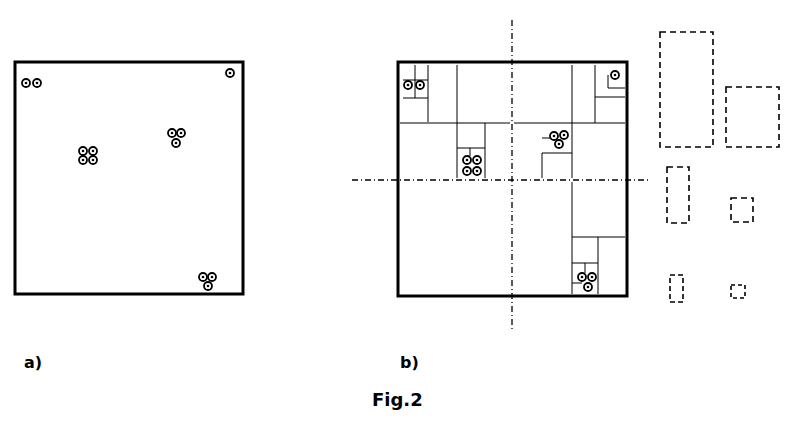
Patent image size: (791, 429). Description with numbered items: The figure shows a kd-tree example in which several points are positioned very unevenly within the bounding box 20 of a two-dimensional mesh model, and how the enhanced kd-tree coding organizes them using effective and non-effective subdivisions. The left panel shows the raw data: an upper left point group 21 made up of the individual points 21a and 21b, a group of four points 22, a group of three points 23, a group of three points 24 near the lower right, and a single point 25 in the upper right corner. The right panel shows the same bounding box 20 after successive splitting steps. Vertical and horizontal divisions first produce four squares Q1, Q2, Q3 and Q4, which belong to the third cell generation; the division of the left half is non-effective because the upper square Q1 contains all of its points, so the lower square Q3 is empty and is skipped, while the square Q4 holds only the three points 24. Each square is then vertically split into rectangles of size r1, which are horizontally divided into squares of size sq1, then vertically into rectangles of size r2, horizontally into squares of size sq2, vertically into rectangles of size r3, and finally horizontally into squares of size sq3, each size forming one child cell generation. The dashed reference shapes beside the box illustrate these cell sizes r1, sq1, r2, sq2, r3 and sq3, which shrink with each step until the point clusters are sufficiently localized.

The bounding box 20 is at (245, 140).
The point cluster 21 is at (60, 74).
The point 21a is at (27, 88).
The point 21b is at (41, 86).
The point cluster 22 is at (80, 160).
The point cluster 23 is at (172, 148).
The points 24 is at (196, 270).
The point 25 is at (226, 68).
The square Q1 is at (431, 37).
The square Q2 is at (553, 37).
The square Q3 is at (373, 217).
The square Q4 is at (555, 317).
The rectangle of size r1 is at (686, 89).
The rectangle of size r2 is at (654, 214).
The rectangle of size r3 is at (680, 301).
The square of size sq1 is at (752, 117).
The square of size sq2 is at (744, 224).
The square of size sq3 is at (742, 305).